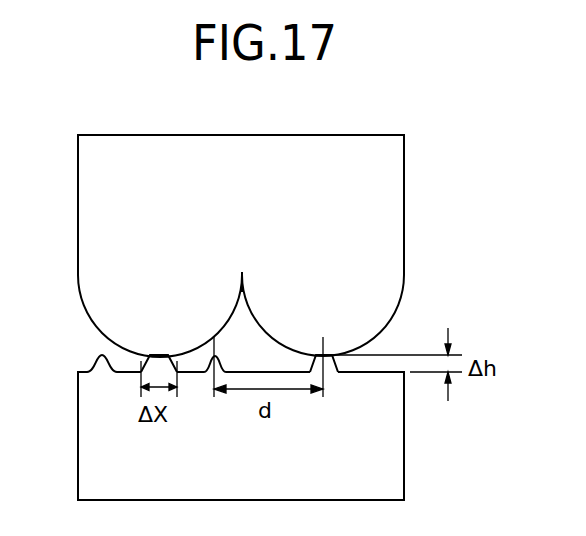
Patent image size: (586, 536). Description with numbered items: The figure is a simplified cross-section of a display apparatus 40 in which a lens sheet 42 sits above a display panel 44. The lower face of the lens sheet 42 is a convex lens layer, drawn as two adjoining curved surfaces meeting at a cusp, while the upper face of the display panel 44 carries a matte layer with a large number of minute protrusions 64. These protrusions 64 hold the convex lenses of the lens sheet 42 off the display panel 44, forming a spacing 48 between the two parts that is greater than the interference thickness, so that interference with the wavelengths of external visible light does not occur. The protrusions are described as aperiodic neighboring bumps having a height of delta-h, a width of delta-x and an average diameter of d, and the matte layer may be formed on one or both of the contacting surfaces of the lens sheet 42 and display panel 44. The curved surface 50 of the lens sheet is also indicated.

The display apparatus 40 is at (386, 122).
The lens sheet 42 is at (398, 237).
The display panel 44 is at (393, 440).
The spacing 48 is at (300, 358).
The curved surface 50 is at (366, 327).
The minute protrusions 64 is at (150, 360).